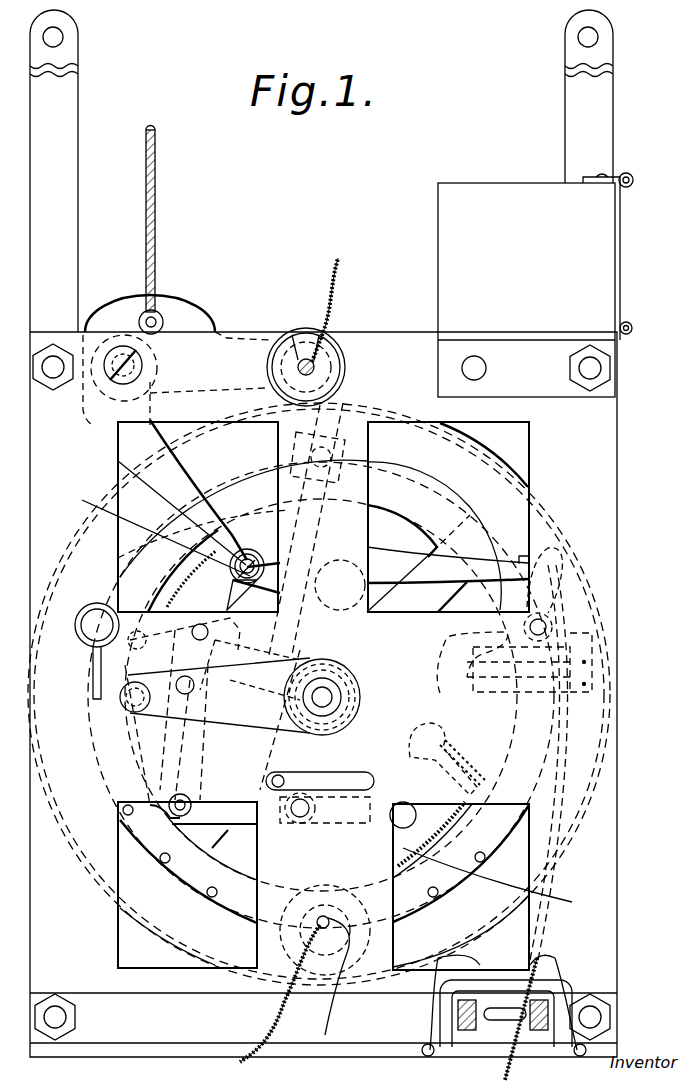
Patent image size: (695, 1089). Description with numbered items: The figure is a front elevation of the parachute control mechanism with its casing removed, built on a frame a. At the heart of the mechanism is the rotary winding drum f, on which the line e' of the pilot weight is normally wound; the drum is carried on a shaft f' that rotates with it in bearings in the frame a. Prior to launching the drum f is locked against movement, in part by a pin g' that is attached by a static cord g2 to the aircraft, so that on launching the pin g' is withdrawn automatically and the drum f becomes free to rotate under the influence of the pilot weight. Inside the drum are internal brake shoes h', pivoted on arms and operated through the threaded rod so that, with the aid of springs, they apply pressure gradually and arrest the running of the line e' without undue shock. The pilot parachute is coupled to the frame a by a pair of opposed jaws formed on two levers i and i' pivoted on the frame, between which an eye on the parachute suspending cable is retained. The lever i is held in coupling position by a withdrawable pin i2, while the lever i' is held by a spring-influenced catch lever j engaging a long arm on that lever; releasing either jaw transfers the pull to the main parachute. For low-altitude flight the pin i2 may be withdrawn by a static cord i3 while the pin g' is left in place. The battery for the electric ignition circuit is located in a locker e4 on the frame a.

The frame a is at (323, 533).
The locker e4 is at (535, 285).
The line e' is at (504, 1022).
The lever i is at (176, 343).
The lever i' is at (229, 369).
The withdrawable pin i2 is at (298, 352).
The static cord i3 is at (338, 310).
The rotary drum f is at (471, 517).
The shaft f' is at (347, 697).
The catch lever j is at (545, 573).
The internal brake shoes h' is at (329, 699).
The pin g' is at (325, 961).
The static cord g2 is at (265, 1028).